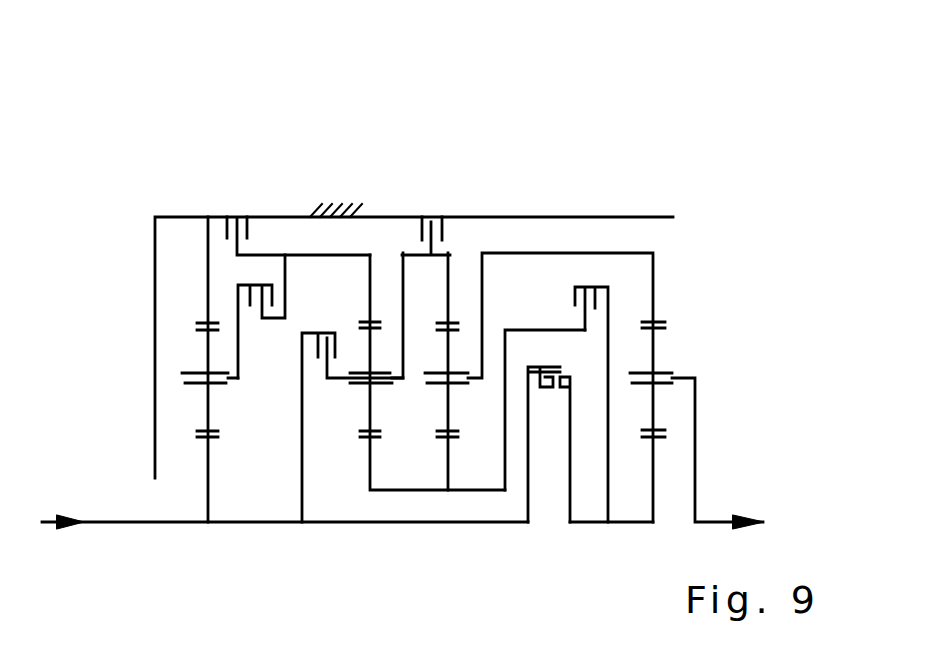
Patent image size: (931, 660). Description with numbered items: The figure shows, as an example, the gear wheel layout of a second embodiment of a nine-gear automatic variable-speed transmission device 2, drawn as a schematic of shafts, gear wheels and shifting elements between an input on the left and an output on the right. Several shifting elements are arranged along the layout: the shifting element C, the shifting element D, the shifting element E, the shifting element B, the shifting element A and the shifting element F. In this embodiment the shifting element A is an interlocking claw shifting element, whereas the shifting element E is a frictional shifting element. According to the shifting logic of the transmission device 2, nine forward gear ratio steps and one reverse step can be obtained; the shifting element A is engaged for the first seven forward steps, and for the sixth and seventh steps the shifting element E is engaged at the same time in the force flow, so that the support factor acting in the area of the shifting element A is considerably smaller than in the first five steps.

The transmission device 2 is at (132, 190).
The shifting element C is at (235, 220).
The shifting element D is at (263, 290).
The shifting element E is at (326, 336).
The shifting element B is at (434, 220).
The shifting element A is at (550, 368).
The shifting element F is at (588, 290).